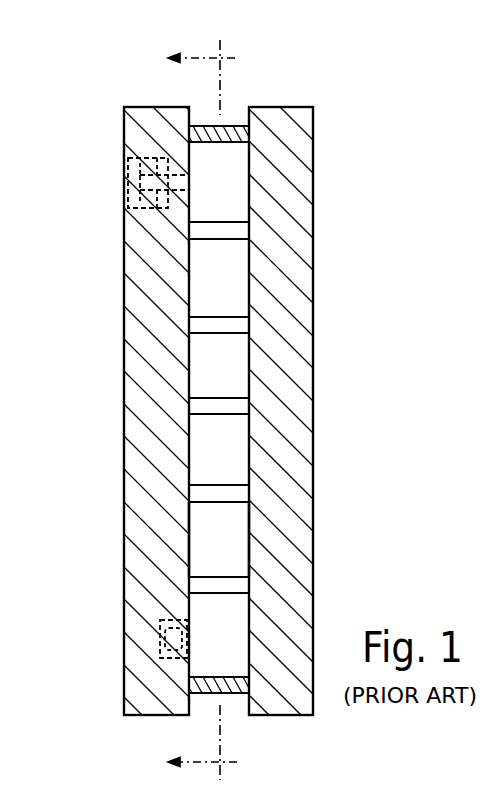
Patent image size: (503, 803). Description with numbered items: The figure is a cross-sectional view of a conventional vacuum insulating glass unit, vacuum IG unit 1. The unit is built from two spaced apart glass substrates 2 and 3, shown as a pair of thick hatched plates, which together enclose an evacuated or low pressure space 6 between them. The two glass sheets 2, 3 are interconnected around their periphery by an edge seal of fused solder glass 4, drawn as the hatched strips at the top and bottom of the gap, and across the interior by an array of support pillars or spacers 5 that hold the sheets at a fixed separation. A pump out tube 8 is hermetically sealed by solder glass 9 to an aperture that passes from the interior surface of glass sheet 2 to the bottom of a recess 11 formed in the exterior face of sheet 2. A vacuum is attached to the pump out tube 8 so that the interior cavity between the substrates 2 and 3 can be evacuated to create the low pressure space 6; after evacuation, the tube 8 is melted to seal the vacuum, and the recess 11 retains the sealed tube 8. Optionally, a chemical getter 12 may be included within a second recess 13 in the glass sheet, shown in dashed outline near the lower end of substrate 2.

The vacuum IG unit 1 is at (323, 188).
The glass substrate 2 is at (124, 455).
The glass substrate 3 is at (287, 337).
The edge seal of fused solder glass 4 is at (232, 133).
The support pillars 5 is at (223, 410).
The low pressure space 6 is at (205, 526).
The pump out tube 8 is at (130, 180).
The solder glass 9 is at (148, 170).
The recess 11 is at (138, 204).
The chemical getter 12 is at (168, 635).
The recess 13 is at (168, 663).